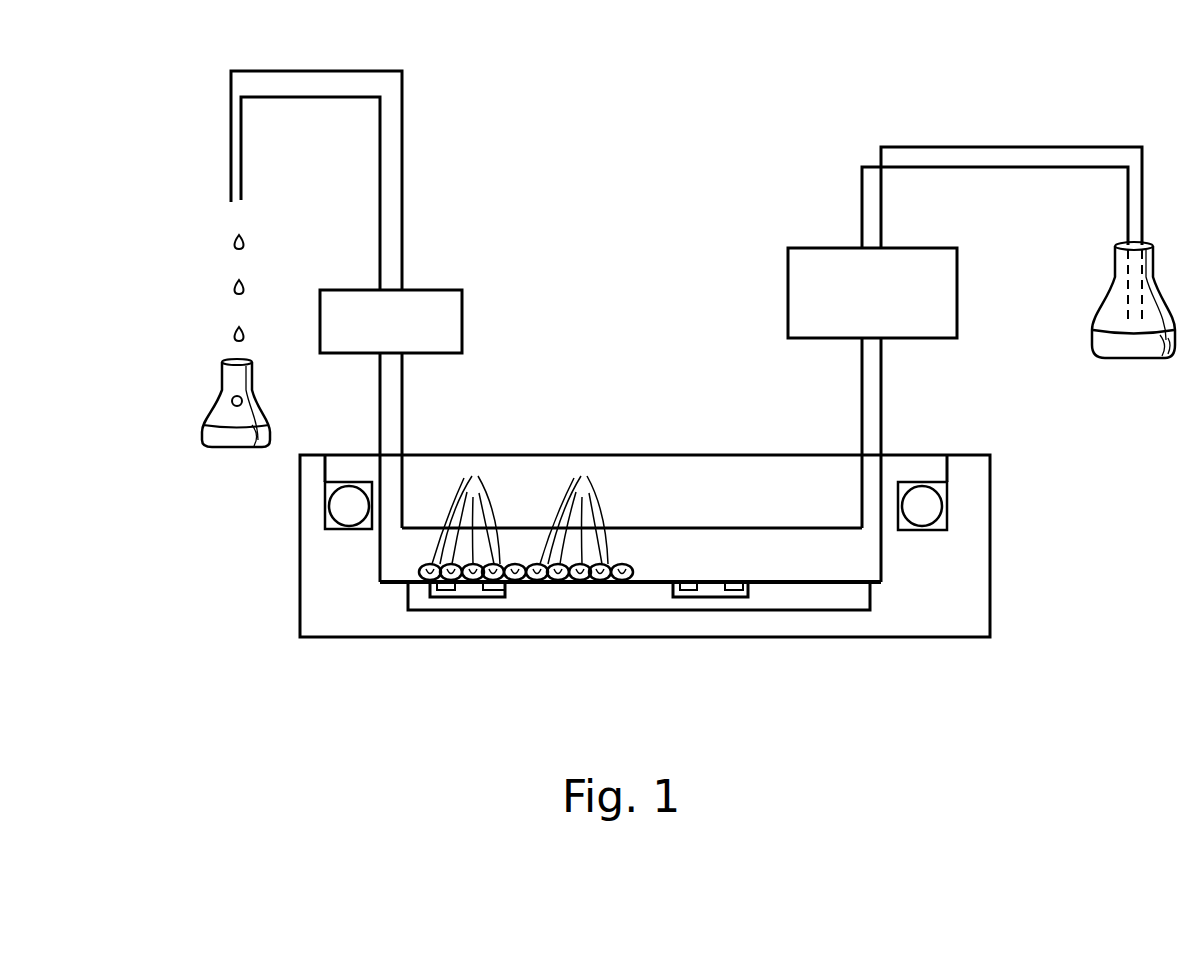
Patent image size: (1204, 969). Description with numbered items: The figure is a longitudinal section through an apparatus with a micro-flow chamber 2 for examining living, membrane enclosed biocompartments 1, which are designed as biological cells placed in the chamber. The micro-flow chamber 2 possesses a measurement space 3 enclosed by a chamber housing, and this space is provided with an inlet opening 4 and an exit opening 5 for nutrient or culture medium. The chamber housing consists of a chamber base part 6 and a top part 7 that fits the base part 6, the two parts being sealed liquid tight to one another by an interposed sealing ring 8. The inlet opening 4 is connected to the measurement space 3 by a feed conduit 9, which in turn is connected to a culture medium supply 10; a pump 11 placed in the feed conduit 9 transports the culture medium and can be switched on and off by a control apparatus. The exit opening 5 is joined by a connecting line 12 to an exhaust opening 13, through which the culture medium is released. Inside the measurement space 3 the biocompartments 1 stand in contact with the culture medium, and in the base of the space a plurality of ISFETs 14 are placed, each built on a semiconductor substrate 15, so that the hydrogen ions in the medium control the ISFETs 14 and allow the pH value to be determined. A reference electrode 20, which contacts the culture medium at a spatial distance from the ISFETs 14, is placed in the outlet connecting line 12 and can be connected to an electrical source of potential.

The biocompartments 1 is at (526, 525).
The micro-flow chamber 2 is at (921, 703).
The measurement space 3 is at (716, 565).
The inlet opening 4 is at (872, 531).
The exit opening 5 is at (392, 540).
The chamber base part 6 is at (560, 620).
The top part 7 is at (690, 472).
The sealing ring 8 is at (356, 517).
The feed conduit 9 is at (1005, 157).
The culture medium supply 10 is at (1118, 352).
The pump 11 is at (886, 307).
The connecting line 12 is at (390, 185).
The exhaust opening 13 is at (228, 222).
The ISFETs 14 is at (478, 628).
The substrate 15 is at (637, 597).
The reference electrode 20 is at (408, 333).